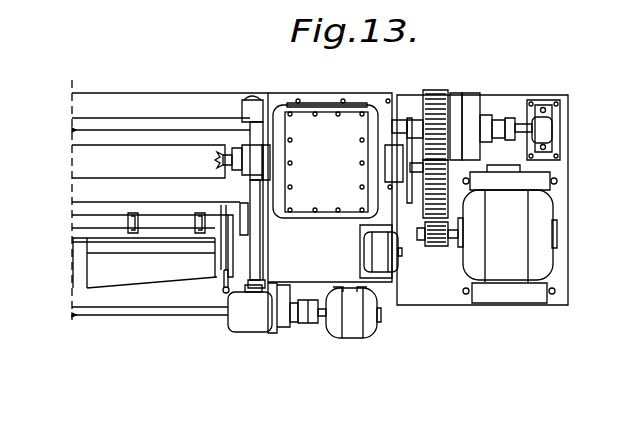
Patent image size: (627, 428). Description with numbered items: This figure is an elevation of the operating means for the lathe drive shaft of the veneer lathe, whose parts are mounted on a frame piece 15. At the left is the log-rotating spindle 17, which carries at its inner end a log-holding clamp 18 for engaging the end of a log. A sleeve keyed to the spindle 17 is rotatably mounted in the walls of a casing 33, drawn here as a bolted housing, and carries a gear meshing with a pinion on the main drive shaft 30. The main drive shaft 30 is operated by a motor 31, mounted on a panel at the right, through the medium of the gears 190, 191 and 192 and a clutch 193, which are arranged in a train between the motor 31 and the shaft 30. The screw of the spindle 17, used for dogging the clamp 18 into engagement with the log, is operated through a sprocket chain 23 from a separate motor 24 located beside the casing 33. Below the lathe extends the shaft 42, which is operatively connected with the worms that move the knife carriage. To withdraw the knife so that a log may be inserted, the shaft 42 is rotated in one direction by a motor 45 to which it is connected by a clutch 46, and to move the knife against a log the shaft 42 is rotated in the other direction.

The frame piece 15 is at (185, 98).
The main drive shaft 30 is at (138, 125).
The shaft 42 is at (138, 315).
The log-rotating spindle 17 is at (243, 153).
The log-holding clamp 18 is at (217, 160).
The casing 33 is at (324, 108).
The sprocket chain 23 is at (407, 207).
The gear 192 is at (445, 75).
The gear 191 is at (448, 197).
The gear 190 is at (438, 246).
The clutch 193 is at (472, 113).
The motor 31 is at (513, 233).
The motor 24 is at (377, 257).
The clutch 46 is at (298, 325).
The motor 45 is at (367, 332).